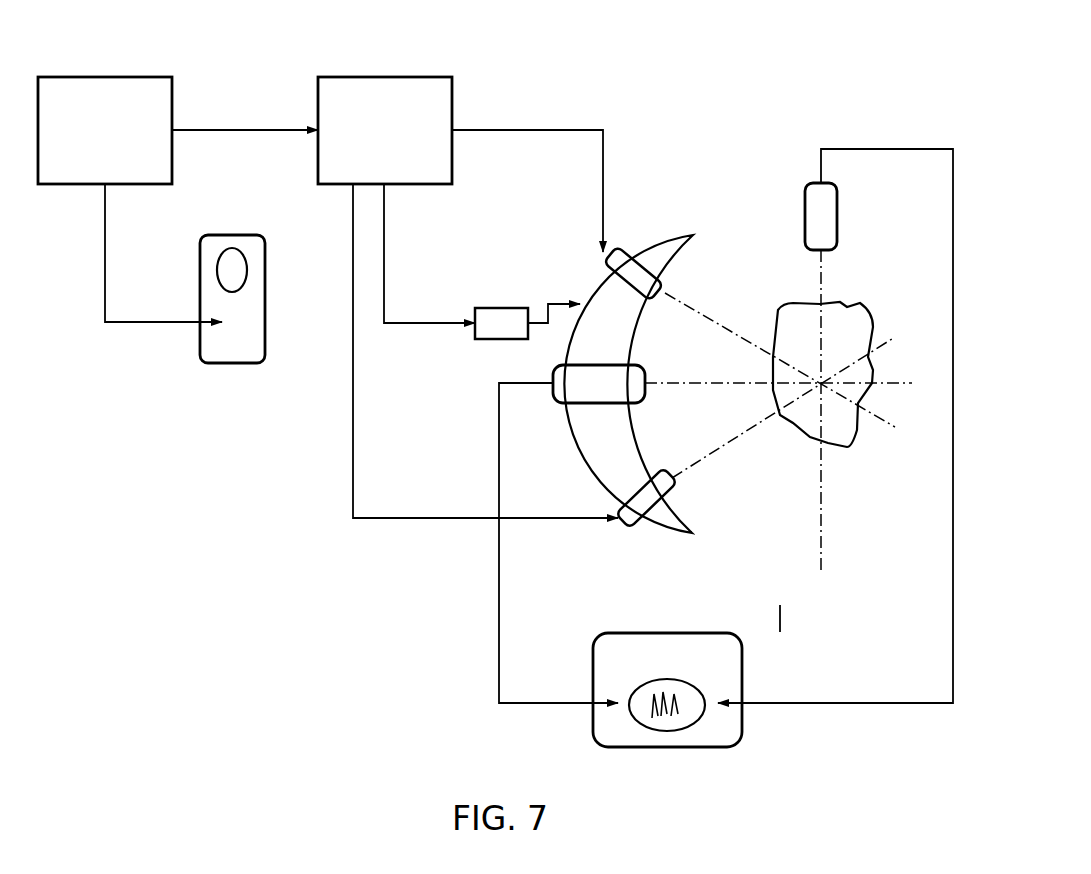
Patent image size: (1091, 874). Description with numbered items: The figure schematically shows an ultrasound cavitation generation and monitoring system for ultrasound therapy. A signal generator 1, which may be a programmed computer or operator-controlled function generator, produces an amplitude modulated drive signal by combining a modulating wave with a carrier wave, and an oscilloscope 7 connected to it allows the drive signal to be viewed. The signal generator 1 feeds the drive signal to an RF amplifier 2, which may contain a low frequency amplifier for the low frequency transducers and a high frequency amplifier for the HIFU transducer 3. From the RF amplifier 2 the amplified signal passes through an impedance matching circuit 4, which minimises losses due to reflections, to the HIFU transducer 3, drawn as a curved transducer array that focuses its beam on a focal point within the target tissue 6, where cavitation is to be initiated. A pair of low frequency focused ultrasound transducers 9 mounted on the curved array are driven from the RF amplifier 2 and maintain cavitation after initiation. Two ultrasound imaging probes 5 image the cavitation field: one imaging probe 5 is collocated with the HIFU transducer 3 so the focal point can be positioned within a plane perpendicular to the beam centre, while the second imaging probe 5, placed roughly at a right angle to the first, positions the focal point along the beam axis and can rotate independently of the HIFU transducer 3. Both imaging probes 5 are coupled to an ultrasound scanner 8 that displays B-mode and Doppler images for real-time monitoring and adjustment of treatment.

The signal generator 1 is at (105, 113).
The RF amplifier 2 is at (385, 113).
The HIFU transducer 3 is at (631, 366).
The impedance matching circuit 4 is at (501, 308).
The ultrasound imaging probe 5 is at (695, 304).
The target tissue 6 is at (823, 374).
The oscilloscope 7 is at (232, 316).
The ultrasound scanner 8 is at (667, 674).
The low frequency focused ultrasound transducer 9 is at (620, 398).